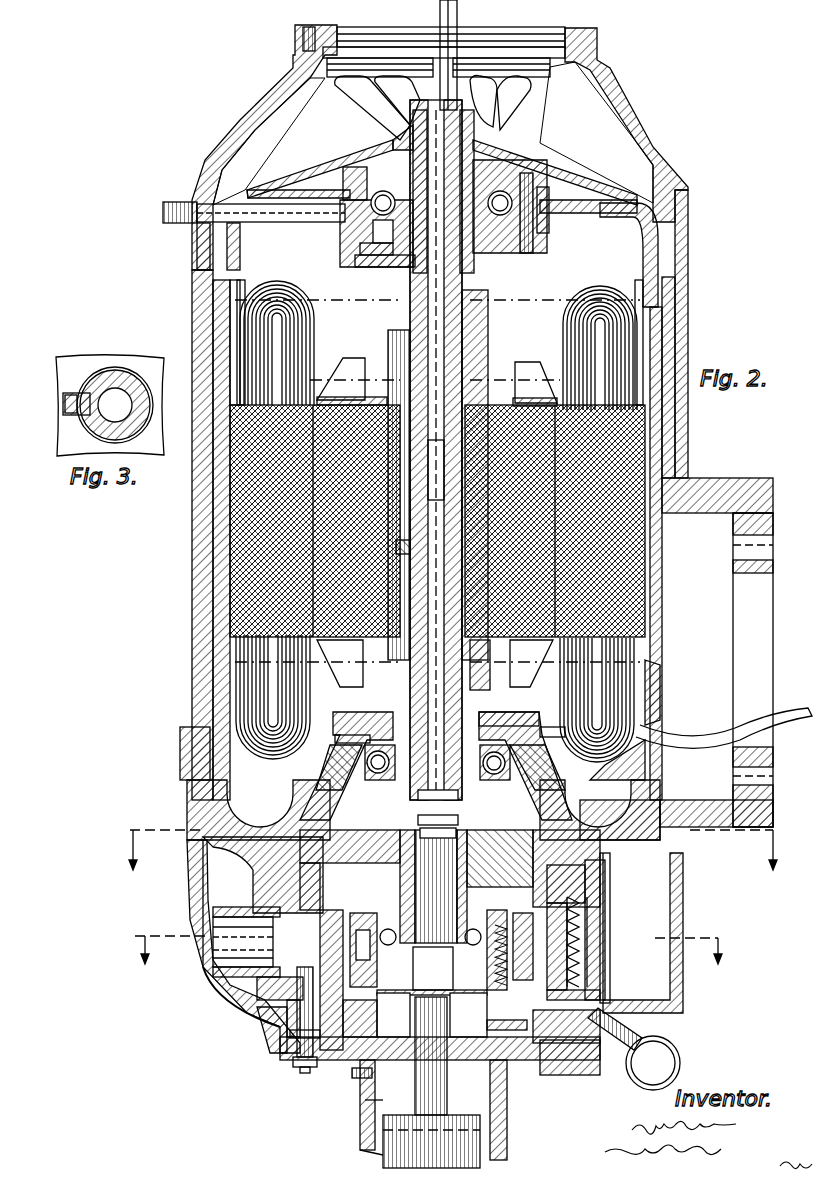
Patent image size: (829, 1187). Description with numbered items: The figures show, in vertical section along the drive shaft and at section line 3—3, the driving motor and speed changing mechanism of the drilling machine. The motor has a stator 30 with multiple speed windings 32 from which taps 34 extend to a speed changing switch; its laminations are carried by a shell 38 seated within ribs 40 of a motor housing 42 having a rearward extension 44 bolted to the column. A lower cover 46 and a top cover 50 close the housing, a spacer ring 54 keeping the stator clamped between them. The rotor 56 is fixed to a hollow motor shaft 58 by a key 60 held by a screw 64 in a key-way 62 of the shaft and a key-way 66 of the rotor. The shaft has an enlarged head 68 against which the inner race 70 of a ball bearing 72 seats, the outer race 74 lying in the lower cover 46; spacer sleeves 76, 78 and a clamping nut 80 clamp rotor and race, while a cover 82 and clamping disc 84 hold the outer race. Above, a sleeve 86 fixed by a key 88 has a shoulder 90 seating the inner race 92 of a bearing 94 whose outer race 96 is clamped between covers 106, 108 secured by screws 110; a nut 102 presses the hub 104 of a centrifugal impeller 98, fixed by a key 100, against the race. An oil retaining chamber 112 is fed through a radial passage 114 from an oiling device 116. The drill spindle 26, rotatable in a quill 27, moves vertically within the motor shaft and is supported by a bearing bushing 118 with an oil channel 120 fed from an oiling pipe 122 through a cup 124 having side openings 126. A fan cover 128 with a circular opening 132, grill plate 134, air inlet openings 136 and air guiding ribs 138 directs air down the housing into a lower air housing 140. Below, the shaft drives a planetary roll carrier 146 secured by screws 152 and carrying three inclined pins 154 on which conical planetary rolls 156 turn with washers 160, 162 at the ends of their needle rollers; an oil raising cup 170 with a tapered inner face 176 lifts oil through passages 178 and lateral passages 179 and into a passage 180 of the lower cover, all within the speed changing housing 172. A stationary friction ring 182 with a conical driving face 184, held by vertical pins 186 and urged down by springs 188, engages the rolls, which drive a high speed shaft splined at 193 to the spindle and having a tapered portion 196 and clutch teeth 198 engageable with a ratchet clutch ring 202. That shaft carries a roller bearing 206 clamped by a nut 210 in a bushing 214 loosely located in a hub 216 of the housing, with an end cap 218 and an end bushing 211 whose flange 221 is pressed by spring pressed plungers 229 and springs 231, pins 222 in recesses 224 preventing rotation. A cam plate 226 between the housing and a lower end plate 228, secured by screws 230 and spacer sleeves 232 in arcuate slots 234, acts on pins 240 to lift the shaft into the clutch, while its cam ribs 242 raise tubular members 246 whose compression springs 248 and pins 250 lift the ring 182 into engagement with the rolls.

In FIG. 2, the section line 3— 3 is at (373, 465).
In FIG. 2, the drill spindle 26 is at (403, 1086).
In FIG. 2, the quill 27 is at (395, 1160).
In FIG. 2, the stator 30 is at (192, 572).
In FIG. 2, the multiple speed windings 32 is at (215, 330).
In FIG. 2, the taps 34 is at (787, 706).
In FIG. 2, the stator shell 38 is at (220, 470).
In FIG. 2, the ribs 40 is at (688, 260).
In FIG. 2, the motor housing 42 is at (192, 595).
In FIG. 2, the rearward extension 44 is at (752, 478).
In FIG. 2, the lower motor housing member or cover 46 is at (182, 810).
In FIG. 2, the top housing member or cover 50 is at (222, 240).
In FIG. 2, the spacer ring 54 is at (230, 337).
In FIG. 3, the rotor 56 is at (96, 358).
In FIG. 2, the rotor 56 is at (375, 398).
In FIG. 3, the hollow motor shaft 58 is at (116, 388).
In FIG. 2, the hollow motor shaft 58 is at (488, 366).
In FIG. 3, the key 60 is at (73, 393).
In FIG. 2, the key 60 is at (390, 360).
In FIG. 2, the key-way 62 is at (385, 660).
In FIG. 2, the screw 64 is at (410, 553).
In FIG. 3, the key-way 66 is at (72, 416).
In FIG. 2, the key-way 66 is at (436, 470).
In FIG. 2, the enlarged head 68 is at (330, 793).
In FIG. 2, the inner race 70 is at (378, 750).
In FIG. 2, the ball bearing 72 is at (372, 748).
In FIG. 2, the outer race 74 is at (360, 755).
In FIG. 2, the spacer sleeve 76 is at (485, 702).
In FIG. 2, the spacer sleeve 78 is at (488, 392).
In FIG. 2, the clamping nut 80 is at (485, 235).
In FIG. 2, the bearing cover 82 is at (532, 722).
In FIG. 2, the clamping disc 84 is at (258, 810).
In FIG. 2, the sleeve 86 is at (416, 112).
In FIG. 2, the key 88 is at (413, 118).
In FIG. 2, the annular shoulder 90 is at (395, 262).
In FIG. 2, the inner race 92 is at (510, 250).
In FIG. 2, the ball bearing 94 is at (545, 232).
In FIG. 2, the outer race 96 is at (343, 230).
In FIG. 2, the centrifugal fan or impeller 98 is at (513, 90).
In FIG. 2, the key 100 is at (498, 135).
In FIG. 2, the nut 102 is at (395, 133).
In FIG. 2, the impeller hub 104 is at (355, 160).
In FIG. 2, the cover 106 is at (320, 175).
In FIG. 2, the lower bearing cover 108 is at (365, 255).
In FIG. 2, the screws 110 is at (527, 176).
In FIG. 2, the oil retaining chamber 112 is at (372, 265).
In FIG. 2, the radial passage 114 is at (283, 222).
In FIG. 2, the oiling device 116 is at (175, 202).
In FIG. 2, the bearing bushing 118 is at (478, 700).
In FIG. 2, the oil retaining channel 120 is at (490, 680).
In FIG. 2, the oiling pipe 122 is at (457, 22).
In FIG. 2, the cup 124 is at (455, 115).
In FIG. 2, the side openings 126 is at (441, 455).
In FIG. 2, the fan cover 128 is at (670, 175).
In FIG. 2, the circular opening 132 is at (345, 68).
In FIG. 2, the grill plate 134 is at (597, 45).
In FIG. 2, the air inlet openings 136 is at (400, 33).
In FIG. 2, the air guiding ribs 138 is at (240, 165).
In FIG. 2, the lower air housing 140 is at (250, 880).
In FIG. 2, the planetary roll carrier 146 is at (617, 771).
In FIG. 2, the screws 152 is at (205, 860).
In FIG. 2, the roll supporting pins 154 is at (433, 886).
In FIG. 2, the planetary roll 156 is at (545, 757).
In FIG. 2, the washers 160 is at (620, 820).
In FIG. 2, the washers 162 is at (548, 822).
In FIG. 2, the oil raising cup 170 is at (590, 950).
In FIG. 2, the speed changing housing 172 is at (610, 900).
In FIG. 2, the inner face 176 is at (590, 935).
In FIG. 2, the passages 178 is at (585, 915).
In FIG. 2, the lateral passages 179 is at (628, 723).
In FIG. 2, the passage 180 is at (330, 775).
In FIG. 2, the planetary friction ring 182 is at (213, 905).
In FIG. 2, the inner driving face 184 is at (213, 912).
In FIG. 2, the vertical pins 186 is at (350, 920).
In FIG. 2, the springs 188 is at (579, 864).
In FIG. 2, the splined connection 193 is at (430, 959).
In FIG. 2, the tapered upper portion 196 is at (330, 928).
In FIG. 2, the clutch teeth 198 is at (437, 833).
In FIG. 2, the ratchet clutch ring 202 is at (438, 806).
In FIG. 2, the roller bearing 206 is at (393, 1015).
In FIG. 2, the nut 210 is at (433, 1109).
In FIG. 2, the end bushing 211 is at (355, 1062).
In FIG. 2, the bushing 214 is at (375, 1018).
In FIG. 2, the hub 216 is at (240, 1008).
In FIG. 2, the end cap 218 is at (432, 984).
In FIG. 2, the outstanding flange 221 is at (512, 1062).
In FIG. 2, the pins 222 is at (292, 1062).
In FIG. 2, the recesses 224 is at (297, 1035).
In FIG. 2, the cam plate 226 is at (265, 1030).
In FIG. 2, the lower end plate 228 is at (575, 1076).
In FIG. 2, the spring pressed plungers 229 is at (608, 1022).
In FIG. 2, the screws 230 is at (305, 1068).
In FIG. 2, the springs 231 is at (491, 973).
In FIG. 2, the spacer sleeves 232 is at (293, 1050).
In FIG. 2, the arcuate slots 234 is at (285, 1023).
In FIG. 2, the pins 240 is at (528, 1044).
In FIG. 2, the cam ribs 242 is at (683, 1005).
In FIG. 2, the tubular members 246 is at (600, 993).
In FIG. 2, the compression springs 248 is at (600, 968).
In FIG. 2, the pins 250 is at (585, 888).